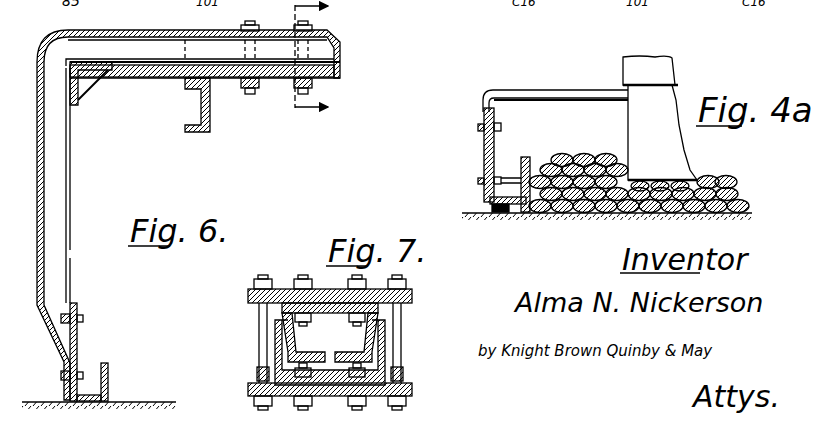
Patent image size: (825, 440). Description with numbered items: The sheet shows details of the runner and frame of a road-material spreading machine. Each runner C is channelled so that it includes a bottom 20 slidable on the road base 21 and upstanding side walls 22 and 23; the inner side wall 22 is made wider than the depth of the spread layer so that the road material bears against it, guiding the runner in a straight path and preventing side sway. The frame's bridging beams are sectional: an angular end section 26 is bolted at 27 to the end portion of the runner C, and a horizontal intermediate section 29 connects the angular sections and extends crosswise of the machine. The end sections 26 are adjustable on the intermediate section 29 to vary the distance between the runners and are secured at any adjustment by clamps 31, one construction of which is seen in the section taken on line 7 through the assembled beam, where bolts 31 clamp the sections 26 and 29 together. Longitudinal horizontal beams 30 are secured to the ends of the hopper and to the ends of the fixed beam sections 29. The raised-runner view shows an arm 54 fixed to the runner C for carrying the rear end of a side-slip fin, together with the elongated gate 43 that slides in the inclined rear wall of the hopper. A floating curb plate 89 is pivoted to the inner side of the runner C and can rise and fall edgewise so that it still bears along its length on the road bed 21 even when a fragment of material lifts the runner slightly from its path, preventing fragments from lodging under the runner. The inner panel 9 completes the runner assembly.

In FIG. 6, the angular end section 26 is at (58, 56).
In FIG. 7, the angular end section 26 is at (332, 300).
In FIG. 6, the inner panel 9 is at (55, 165).
In FIG. 6, the horizontal intermediate section 29 is at (345, 73).
In FIG. 7, the horizontal intermediate section 29 is at (290, 377).
In FIG. 6, the longitudinal horizontal beam 30 is at (199, 112).
In FIG. 6, the clamp 31 is at (302, 94).
In FIG. 7, the clamp 31 is at (410, 293).
In FIG. 6, the section line 7- 7 is at (324, 63).
In FIG. 6, the side wall 23 is at (68, 361).
In FIG. 4A, the side wall 23 is at (485, 158).
In FIG. 6, the bolts 27 is at (82, 374).
In FIG. 6, the runner C is at (100, 362).
In FIG. 4A, the runner C is at (486, 194).
In FIG. 6, the inner side wall 22 is at (108, 366).
In FIG. 4A, the inner side wall 22 is at (525, 157).
In FIG. 6, the bottom 20 is at (72, 396).
In FIG. 4A, the bottom 20 is at (512, 213).
In FIG. 6, the road base 21 is at (130, 402).
In FIG. 4A, the road base 21 is at (625, 215).
In FIG. 4A, the arm 54 is at (548, 90).
In FIG. 4A, the gate 43 is at (628, 127).
In FIG. 4A, the floating curb plate 89 is at (550, 215).